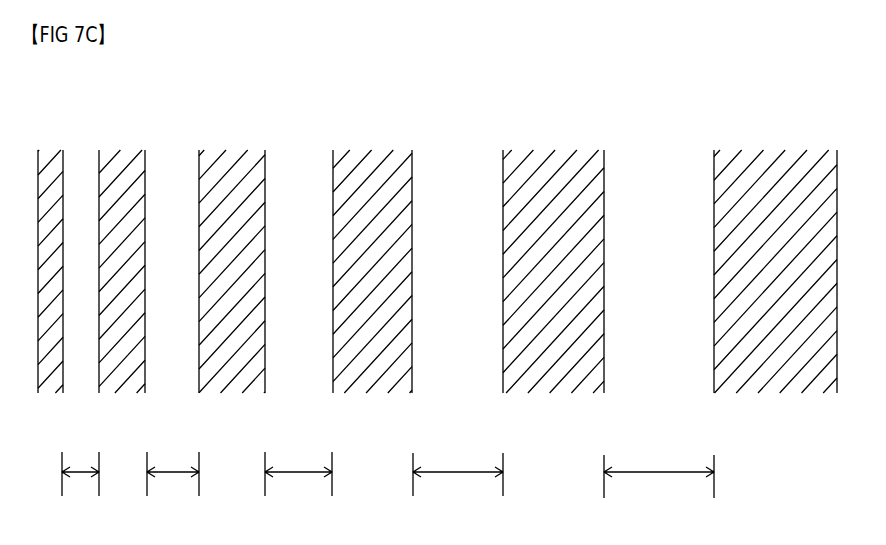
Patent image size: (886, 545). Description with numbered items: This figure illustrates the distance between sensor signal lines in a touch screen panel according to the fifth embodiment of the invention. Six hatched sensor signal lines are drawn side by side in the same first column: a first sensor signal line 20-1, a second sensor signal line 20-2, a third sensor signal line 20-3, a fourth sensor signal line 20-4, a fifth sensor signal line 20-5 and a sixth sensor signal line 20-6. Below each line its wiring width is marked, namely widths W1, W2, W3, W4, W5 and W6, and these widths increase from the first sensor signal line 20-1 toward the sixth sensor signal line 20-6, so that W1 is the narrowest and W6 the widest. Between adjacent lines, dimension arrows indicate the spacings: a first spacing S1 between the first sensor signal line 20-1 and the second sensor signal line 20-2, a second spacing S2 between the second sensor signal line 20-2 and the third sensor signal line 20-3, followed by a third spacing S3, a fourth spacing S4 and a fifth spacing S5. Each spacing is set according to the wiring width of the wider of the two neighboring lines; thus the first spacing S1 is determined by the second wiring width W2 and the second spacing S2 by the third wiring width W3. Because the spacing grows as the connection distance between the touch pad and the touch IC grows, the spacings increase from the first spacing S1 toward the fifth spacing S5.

The first sensor signal line 20-1 is at (50, 148).
The second sensor signal line 20-2 is at (120, 150).
The third sensor signal line 20-3 is at (232, 148).
The fourth sensor signal line 20-4 is at (374, 148).
The fifth sensor signal line 20-5 is at (555, 150).
The sixth sensor signal line 20-6 is at (781, 150).
The wiring width of first sensor signal line W1 is at (53, 422).
The second wiring width W2 is at (120, 420).
The third wiring width W3 is at (234, 421).
The wiring width of fourth sensor signal line W4 is at (372, 420).
The wiring width of fifth sensor signal line W5 is at (556, 420).
The wiring width of sixth sensor signal line W6 is at (773, 420).
The first spacing S1 is at (80, 493).
The second spacing S2 is at (173, 491).
The third spacing S3 is at (298, 490).
The fourth spacing S4 is at (458, 492).
The fifth spacing S5 is at (659, 492).